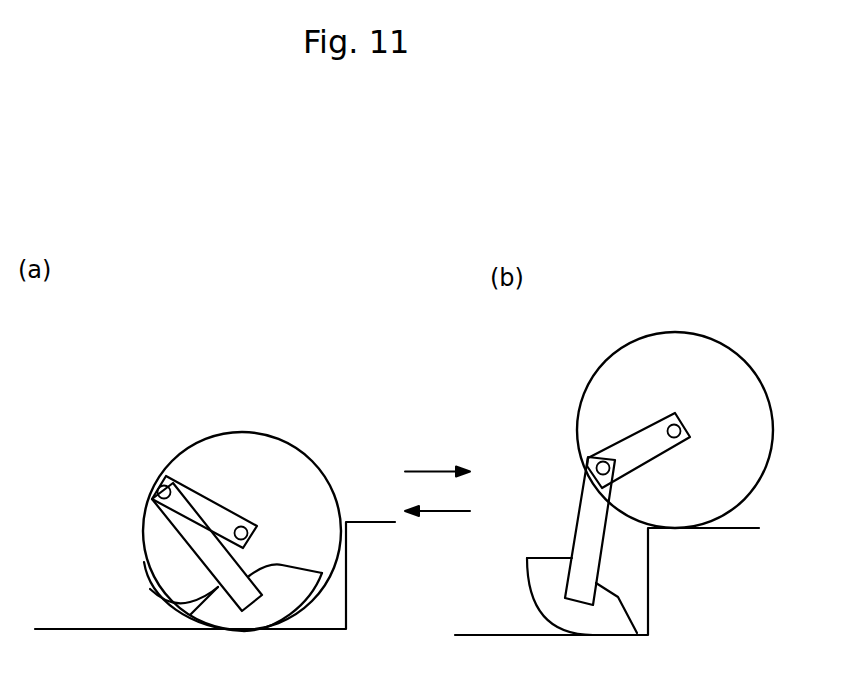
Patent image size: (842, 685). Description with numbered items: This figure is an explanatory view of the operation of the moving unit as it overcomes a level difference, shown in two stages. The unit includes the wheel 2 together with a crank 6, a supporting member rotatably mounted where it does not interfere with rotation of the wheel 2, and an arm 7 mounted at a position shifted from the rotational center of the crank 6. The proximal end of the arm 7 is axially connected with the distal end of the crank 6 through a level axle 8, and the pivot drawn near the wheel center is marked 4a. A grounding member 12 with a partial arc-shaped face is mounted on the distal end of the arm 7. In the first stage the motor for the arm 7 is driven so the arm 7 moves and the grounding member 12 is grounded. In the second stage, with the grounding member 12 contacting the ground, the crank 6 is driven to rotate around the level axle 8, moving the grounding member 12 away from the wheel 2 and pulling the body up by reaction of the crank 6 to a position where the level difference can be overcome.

The wheel 2 is at (284, 441).
The crank 6 is at (207, 497).
The arm 7 is at (172, 531).
The level axle 8 is at (155, 488).
The axle 4a is at (247, 527).
The grounding member 12 is at (155, 589).